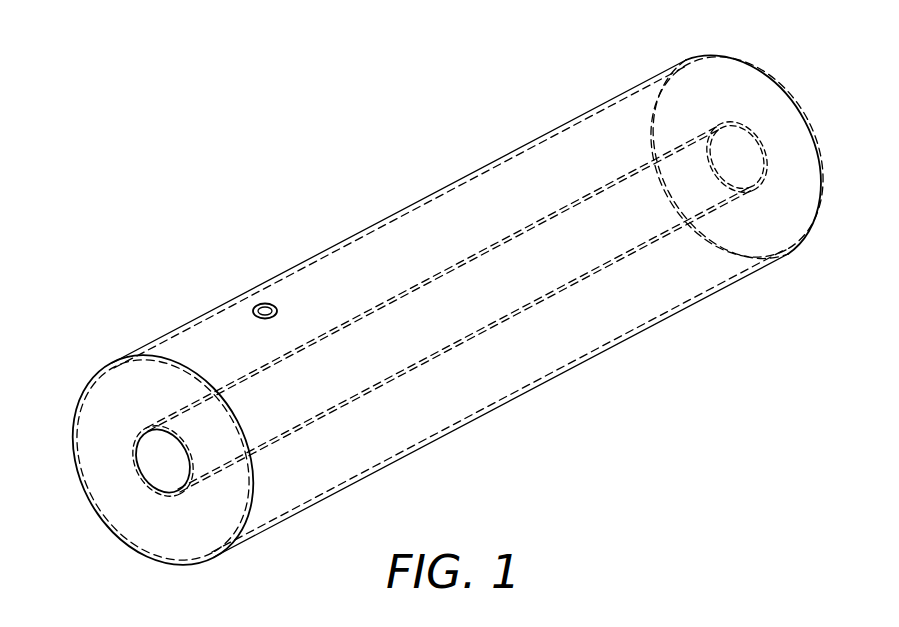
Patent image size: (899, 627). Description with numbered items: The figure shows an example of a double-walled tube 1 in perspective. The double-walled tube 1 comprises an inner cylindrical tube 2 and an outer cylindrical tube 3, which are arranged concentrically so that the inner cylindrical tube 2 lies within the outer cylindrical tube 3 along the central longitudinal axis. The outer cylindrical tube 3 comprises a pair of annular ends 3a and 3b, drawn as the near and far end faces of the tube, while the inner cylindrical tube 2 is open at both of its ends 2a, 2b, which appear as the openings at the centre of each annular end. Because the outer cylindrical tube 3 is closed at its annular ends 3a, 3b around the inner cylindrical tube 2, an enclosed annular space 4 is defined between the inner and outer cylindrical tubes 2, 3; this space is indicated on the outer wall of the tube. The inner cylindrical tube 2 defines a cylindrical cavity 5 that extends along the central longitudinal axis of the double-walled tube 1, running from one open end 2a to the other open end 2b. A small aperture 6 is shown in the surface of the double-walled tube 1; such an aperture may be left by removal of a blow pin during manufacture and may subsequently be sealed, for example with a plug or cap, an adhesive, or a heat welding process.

The double-walled tube 1 is at (333, 212).
The inner cylindrical tube 2 is at (394, 377).
The end of inner cylindrical tube 2a is at (147, 455).
The end of inner cylindrical tube 2b is at (745, 157).
The outer cylindrical tube 3 is at (506, 401).
The annular end 3a is at (101, 381).
The annular end 3b is at (745, 70).
The enclosed annular space 4 is at (566, 337).
The cylindrical cavity 5 is at (153, 476).
The aperture 6 is at (263, 305).